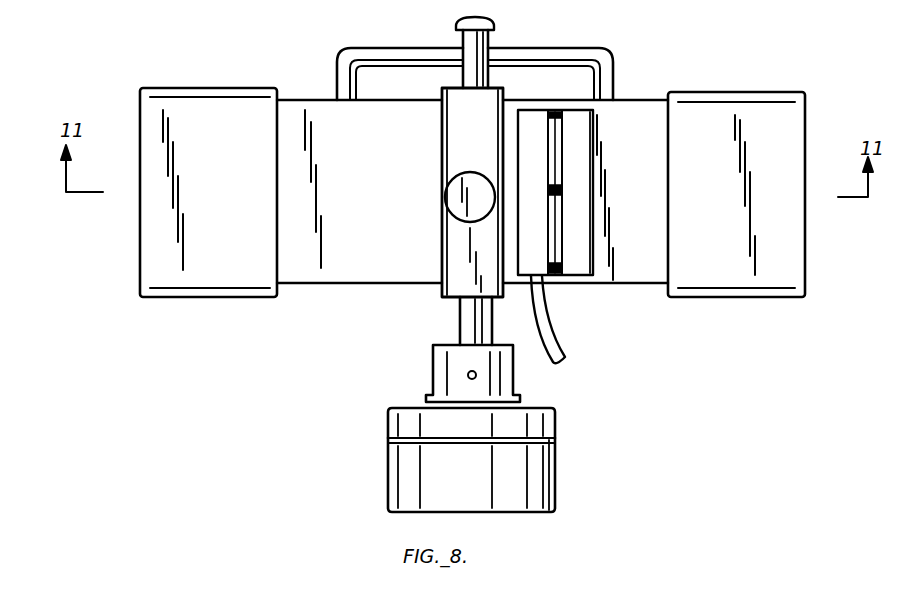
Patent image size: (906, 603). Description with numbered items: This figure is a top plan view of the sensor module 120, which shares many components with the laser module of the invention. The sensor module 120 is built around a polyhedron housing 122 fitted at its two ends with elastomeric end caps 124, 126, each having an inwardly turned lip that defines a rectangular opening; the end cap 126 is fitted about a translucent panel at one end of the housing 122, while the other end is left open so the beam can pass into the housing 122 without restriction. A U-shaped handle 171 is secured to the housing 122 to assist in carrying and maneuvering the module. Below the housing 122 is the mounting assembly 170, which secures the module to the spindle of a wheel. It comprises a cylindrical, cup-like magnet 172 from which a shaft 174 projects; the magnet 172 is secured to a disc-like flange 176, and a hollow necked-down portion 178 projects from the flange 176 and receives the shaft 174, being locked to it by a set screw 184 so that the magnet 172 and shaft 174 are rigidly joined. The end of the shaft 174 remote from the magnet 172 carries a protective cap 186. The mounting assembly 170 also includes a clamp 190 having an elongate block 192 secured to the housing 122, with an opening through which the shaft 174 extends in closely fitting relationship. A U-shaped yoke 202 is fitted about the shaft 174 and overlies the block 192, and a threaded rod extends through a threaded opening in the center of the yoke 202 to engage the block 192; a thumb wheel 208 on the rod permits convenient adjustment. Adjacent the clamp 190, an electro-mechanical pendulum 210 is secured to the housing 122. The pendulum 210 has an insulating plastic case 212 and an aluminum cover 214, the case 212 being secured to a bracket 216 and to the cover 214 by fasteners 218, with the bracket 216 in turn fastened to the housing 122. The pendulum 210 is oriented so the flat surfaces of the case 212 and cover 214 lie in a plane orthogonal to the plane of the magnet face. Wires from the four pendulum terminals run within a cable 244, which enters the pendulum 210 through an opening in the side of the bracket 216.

The sensor module 120 is at (278, 368).
The polyhedron housing 122 is at (364, 283).
The elastomeric end cap 124 is at (215, 97).
The elastomeric end cap 126 is at (748, 97).
The mounting assembly 170 is at (393, 348).
The U-shaped handle 171 is at (590, 52).
The magnet 172 is at (555, 470).
The shaft 174 is at (490, 38).
The disc-like flange 176 is at (555, 416).
The necked-down portion 178 is at (513, 370).
The set screw 184 is at (467, 375).
The protective cap 186 is at (470, 25).
The clamp 190 is at (420, 145).
The elongate block 192 is at (440, 176).
The U-shaped yoke 202 is at (462, 250).
The thumb wheel 208 is at (455, 203).
The electro-mechanical pendulum 210 is at (620, 160).
The insulating case 212 is at (556, 112).
The aluminum cover 214 is at (583, 133).
The bracket 216 is at (535, 136).
The fasteners 218 is at (556, 190).
The cable 244 is at (555, 352).